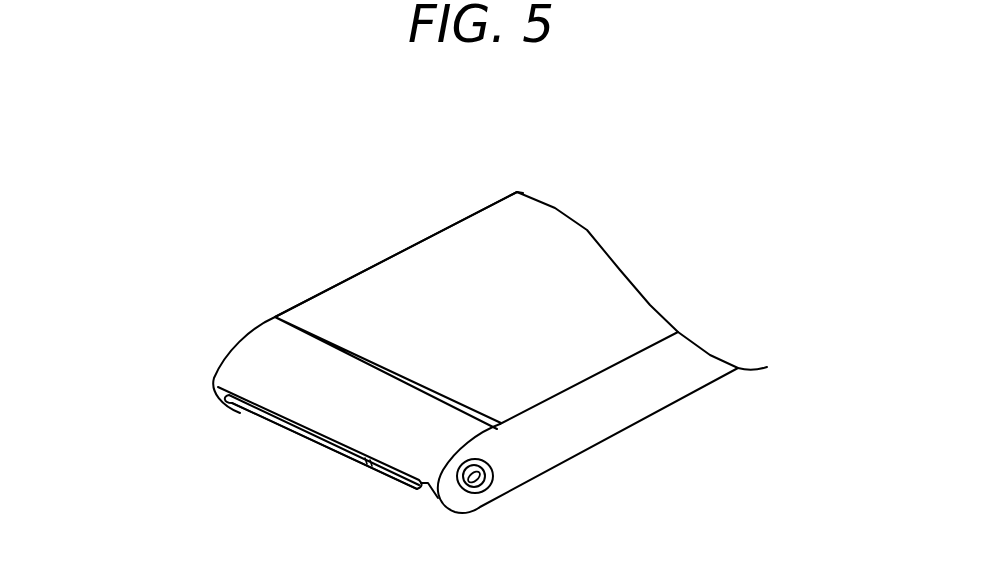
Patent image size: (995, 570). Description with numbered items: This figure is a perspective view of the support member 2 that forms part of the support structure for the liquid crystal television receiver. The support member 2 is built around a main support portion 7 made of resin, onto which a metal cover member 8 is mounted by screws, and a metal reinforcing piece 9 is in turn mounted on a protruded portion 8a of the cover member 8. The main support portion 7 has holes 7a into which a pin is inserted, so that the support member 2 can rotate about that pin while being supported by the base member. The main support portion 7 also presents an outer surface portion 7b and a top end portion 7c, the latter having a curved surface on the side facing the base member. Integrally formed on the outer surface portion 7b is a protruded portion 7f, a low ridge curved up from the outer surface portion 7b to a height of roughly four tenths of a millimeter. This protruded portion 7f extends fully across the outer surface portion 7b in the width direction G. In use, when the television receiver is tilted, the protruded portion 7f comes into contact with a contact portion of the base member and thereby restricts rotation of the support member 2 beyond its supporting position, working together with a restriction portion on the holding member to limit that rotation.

The support member 2 is at (393, 233).
The main support portion 7 is at (442, 287).
The holes 7a is at (492, 468).
The outer surface portion 7b is at (540, 300).
The top end portion 7c is at (300, 393).
The protruded portion 7f is at (333, 340).
The cover member 8 is at (373, 467).
The protruded portion 8a is at (368, 462).
The reinforcing piece 9 is at (318, 441).
The width direction G is at (367, 308).